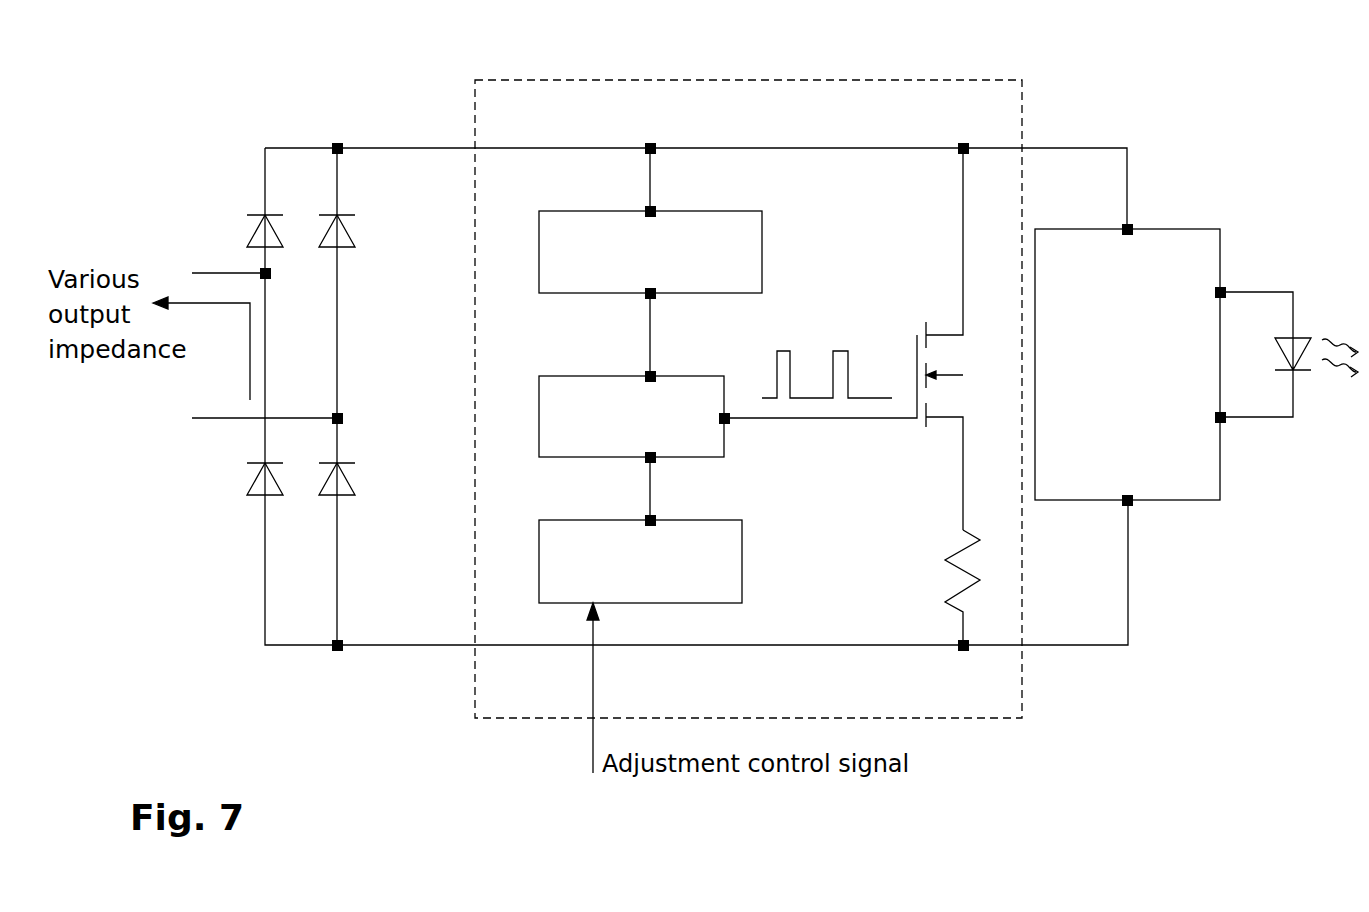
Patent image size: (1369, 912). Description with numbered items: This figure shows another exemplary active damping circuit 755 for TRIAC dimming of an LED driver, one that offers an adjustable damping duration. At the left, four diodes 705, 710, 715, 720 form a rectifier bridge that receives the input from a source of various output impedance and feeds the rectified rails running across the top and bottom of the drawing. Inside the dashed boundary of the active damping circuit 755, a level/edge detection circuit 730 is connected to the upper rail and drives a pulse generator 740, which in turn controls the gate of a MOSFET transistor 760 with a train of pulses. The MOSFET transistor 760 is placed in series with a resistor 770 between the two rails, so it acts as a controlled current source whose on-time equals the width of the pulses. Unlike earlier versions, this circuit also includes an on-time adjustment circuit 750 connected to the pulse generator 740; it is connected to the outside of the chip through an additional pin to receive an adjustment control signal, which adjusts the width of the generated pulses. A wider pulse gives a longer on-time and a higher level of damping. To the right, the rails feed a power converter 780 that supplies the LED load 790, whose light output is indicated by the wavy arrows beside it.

The rectifier diode 705 is at (243, 212).
The rectifier diode 710 is at (247, 503).
The rectifier diode 715 is at (362, 215).
The rectifier diode 720 is at (363, 497).
The level/edge detection circuit 730 is at (760, 214).
The pulse generator 740 is at (698, 373).
The on-time adjustment circuit 750 is at (698, 517).
The active damping circuit 755 is at (932, 78).
The MOSFET transistor 760 is at (917, 335).
The resistor 770 is at (948, 565).
The power converter 780 is at (1202, 223).
The LED load 790 is at (1313, 328).